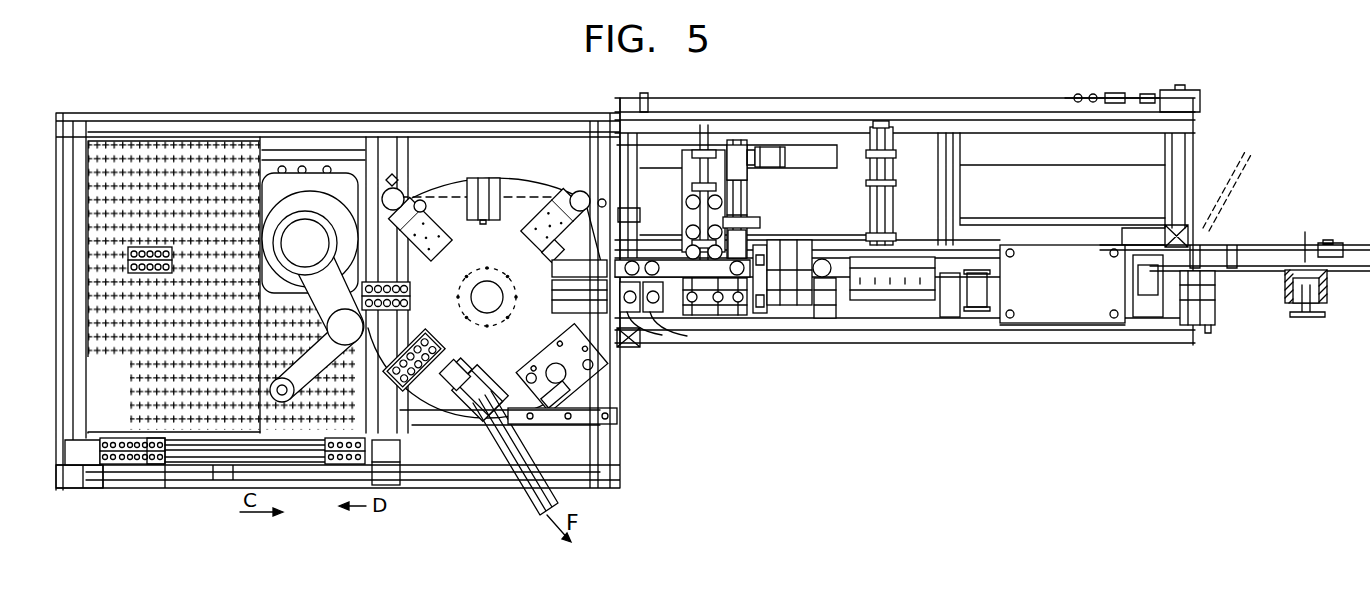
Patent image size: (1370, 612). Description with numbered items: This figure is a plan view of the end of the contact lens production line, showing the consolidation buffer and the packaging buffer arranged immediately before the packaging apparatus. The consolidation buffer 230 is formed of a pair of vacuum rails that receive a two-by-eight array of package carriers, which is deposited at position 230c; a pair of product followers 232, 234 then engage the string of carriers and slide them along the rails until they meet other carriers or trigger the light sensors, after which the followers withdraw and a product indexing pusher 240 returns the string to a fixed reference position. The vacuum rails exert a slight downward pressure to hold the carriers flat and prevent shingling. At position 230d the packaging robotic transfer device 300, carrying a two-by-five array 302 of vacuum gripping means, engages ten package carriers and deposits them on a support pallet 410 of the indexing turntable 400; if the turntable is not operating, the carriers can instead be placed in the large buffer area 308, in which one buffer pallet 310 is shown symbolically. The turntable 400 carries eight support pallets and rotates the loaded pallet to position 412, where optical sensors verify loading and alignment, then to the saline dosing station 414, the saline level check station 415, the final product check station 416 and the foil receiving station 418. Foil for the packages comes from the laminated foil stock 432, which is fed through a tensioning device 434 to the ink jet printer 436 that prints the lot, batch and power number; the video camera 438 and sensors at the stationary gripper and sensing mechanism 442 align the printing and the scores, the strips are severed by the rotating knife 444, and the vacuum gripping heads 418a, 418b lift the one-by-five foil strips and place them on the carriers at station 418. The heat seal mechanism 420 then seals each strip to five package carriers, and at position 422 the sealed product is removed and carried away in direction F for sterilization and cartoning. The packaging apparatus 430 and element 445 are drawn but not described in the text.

The consolidation buffer 230 is at (157, 480).
The deposit position 230c is at (153, 470).
The pick-up position 230d is at (347, 467).
The product follower 232 is at (103, 467).
The product follower 234 is at (82, 490).
The product indexing pusher 240 is at (387, 472).
The packaging robotic transfer device 300 is at (313, 287).
The 2×5 array of vacuum gripping means 302 is at (232, 395).
The buffer area 308 is at (174, 285).
The buffer pallet 310 is at (133, 249).
The indexing turntable 400 is at (443, 207).
The support pallet 410 is at (409, 296).
The verification position 412 is at (433, 247).
The saline dosing station 414 is at (485, 176).
The saline level check station 415 is at (532, 236).
The final product check station 416 is at (548, 262).
The foil receiving station 418 is at (548, 300).
The vacuum gripping head 418a is at (640, 313).
The vacuum gripping head 418b is at (665, 315).
The heat seal mechanism 420 is at (536, 326).
The unloading position 422 is at (487, 368).
The transfer machine 430 is at (935, 414).
The laminated foil stock 432 is at (1232, 280).
The tensioning device 434 is at (1211, 328).
The ink jet printer 436 is at (1070, 297).
The video camera 438 is at (890, 303).
The stationary gripper and sensing mechanism 442 is at (810, 318).
The rotating knife 444 is at (755, 317).
The pin holder 445 is at (712, 317).